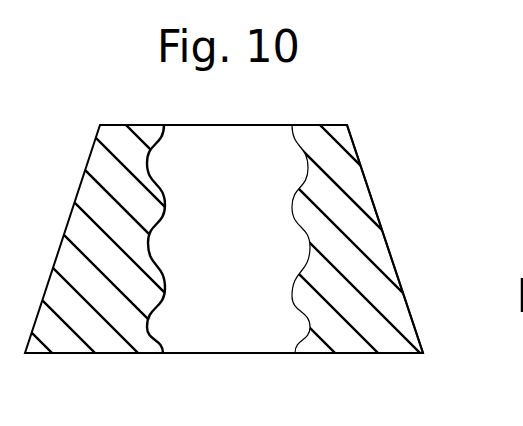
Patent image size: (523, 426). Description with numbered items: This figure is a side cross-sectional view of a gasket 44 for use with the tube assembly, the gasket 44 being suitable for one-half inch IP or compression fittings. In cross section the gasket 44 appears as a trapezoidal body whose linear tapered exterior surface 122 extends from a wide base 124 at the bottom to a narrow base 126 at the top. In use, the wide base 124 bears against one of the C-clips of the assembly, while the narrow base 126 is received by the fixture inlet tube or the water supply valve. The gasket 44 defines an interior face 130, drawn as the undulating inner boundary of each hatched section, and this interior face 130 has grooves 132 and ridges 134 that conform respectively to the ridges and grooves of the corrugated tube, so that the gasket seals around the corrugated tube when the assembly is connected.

The gasket 44 is at (390, 253).
The linear tapered exterior surface 122 is at (363, 173).
The wide base 124 is at (423, 353).
The narrow base 126 is at (347, 125).
The interior face 130 is at (162, 238).
The grooves 132 is at (152, 253).
The ridges 134 is at (168, 286).